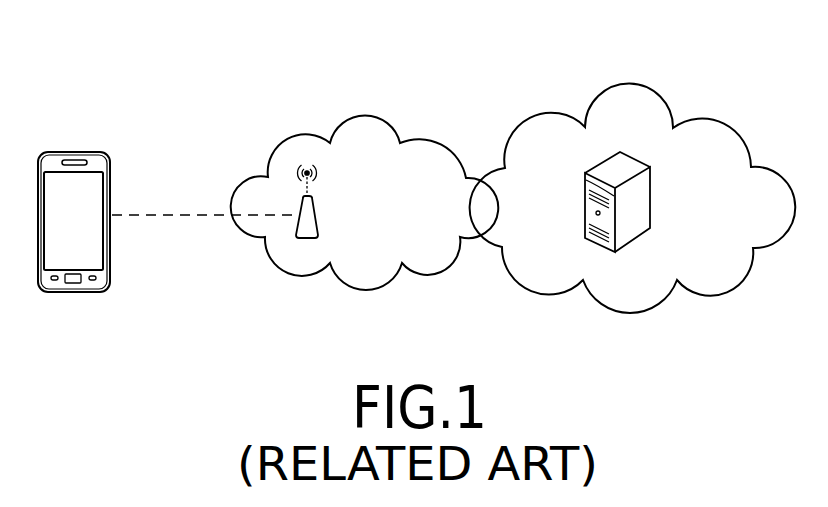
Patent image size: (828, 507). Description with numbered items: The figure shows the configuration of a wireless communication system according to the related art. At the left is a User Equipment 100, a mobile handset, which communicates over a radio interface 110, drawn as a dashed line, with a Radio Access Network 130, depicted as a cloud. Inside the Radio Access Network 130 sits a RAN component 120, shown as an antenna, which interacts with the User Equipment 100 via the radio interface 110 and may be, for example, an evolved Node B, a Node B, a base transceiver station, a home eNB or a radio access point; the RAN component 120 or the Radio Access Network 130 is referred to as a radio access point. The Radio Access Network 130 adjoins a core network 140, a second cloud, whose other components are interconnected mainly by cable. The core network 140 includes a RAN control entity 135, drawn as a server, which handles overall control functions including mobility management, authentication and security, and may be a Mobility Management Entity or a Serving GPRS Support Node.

The User Equipment (UE) 100 is at (72, 151).
The radio interface 110 is at (172, 212).
The RAN component 120 is at (318, 213).
The Radio Access Network (RAN) 130 is at (364, 112).
The RAN control entity 135 is at (652, 196).
The core network 140 is at (628, 84).